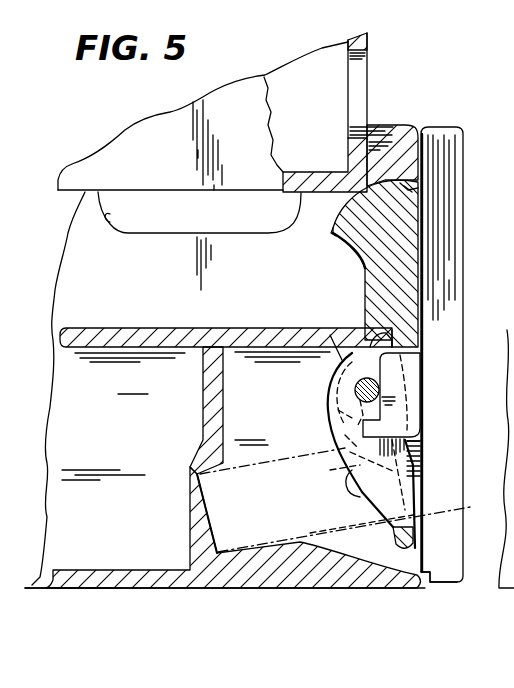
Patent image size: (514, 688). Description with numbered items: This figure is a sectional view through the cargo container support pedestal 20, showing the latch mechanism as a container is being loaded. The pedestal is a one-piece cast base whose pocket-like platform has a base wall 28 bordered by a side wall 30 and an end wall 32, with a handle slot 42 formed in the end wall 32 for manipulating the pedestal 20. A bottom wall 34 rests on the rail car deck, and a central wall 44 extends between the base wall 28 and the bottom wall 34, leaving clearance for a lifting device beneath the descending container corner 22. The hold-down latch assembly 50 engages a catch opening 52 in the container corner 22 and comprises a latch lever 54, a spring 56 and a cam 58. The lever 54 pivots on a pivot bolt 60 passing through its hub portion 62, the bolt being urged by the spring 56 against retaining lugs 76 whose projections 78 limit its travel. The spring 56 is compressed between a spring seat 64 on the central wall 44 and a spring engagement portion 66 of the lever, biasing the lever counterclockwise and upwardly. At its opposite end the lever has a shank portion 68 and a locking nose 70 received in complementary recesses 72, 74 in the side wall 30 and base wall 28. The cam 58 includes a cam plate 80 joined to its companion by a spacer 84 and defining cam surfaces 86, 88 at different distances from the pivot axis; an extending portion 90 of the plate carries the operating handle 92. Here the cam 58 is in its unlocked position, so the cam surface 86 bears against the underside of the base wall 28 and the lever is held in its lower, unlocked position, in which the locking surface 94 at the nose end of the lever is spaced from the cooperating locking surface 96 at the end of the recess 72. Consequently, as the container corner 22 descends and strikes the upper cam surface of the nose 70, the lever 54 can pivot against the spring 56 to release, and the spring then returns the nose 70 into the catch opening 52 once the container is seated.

The cargo container support pedestal 20 is at (132, 627).
The container corner 22 is at (220, 102).
The base wall 28 is at (183, 328).
The side wall 30 is at (418, 130).
The end wall 32 is at (437, 578).
The bottom wall 34 is at (148, 588).
The handle slot 42 is at (117, 214).
The central wall 44 is at (212, 383).
The hold-down latch assembly 50 is at (478, 251).
The catch opening 52 is at (368, 63).
The latch lever 54 is at (417, 277).
The spring 56 is at (273, 457).
The cam 58 is at (420, 473).
The pivot bolt 60 is at (327, 388).
The hub portion 62 is at (330, 387).
The spring seat 64 is at (207, 518).
The spring engagement portion 66 is at (356, 525).
The shank portion 68 is at (396, 290).
The locking nose 70 is at (338, 235).
The recess 72 is at (400, 185).
The recess 74 is at (396, 325).
The retaining lugs 76 is at (418, 382).
The projections 78 is at (353, 460).
The cam plate 80 is at (330, 400).
The spacer 84 is at (340, 432).
The cam surface 86 is at (377, 340).
The cam surface 88 is at (342, 367).
The extending portion 90 is at (367, 513).
The operating handle 92 is at (417, 540).
The locking surface 94 is at (420, 193).
The locking surface 96 is at (420, 172).